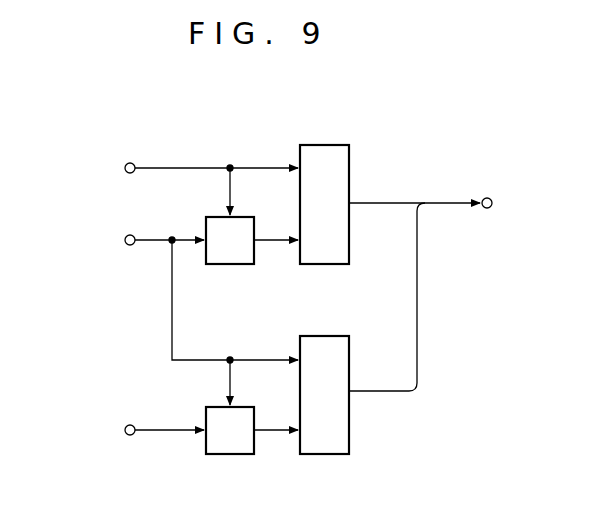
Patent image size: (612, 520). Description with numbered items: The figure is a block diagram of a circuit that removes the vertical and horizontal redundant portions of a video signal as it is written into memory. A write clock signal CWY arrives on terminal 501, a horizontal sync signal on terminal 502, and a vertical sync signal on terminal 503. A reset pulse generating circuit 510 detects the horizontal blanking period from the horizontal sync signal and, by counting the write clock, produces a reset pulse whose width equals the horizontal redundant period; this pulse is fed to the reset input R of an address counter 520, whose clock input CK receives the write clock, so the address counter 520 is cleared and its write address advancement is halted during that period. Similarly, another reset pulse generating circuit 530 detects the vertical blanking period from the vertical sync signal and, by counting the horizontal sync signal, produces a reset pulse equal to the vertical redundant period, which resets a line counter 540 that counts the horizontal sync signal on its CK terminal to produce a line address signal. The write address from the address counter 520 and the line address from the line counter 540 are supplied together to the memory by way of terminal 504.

The terminal 501 is at (130, 163).
The terminal 502 is at (130, 235).
The terminal 503 is at (130, 425).
The terminal 504 is at (487, 198).
The reset pulse generating circuit 510 is at (247, 264).
The address counter 520 is at (343, 145).
The reset pulse generating circuit 530 is at (248, 454).
The line counter 540 is at (343, 336).